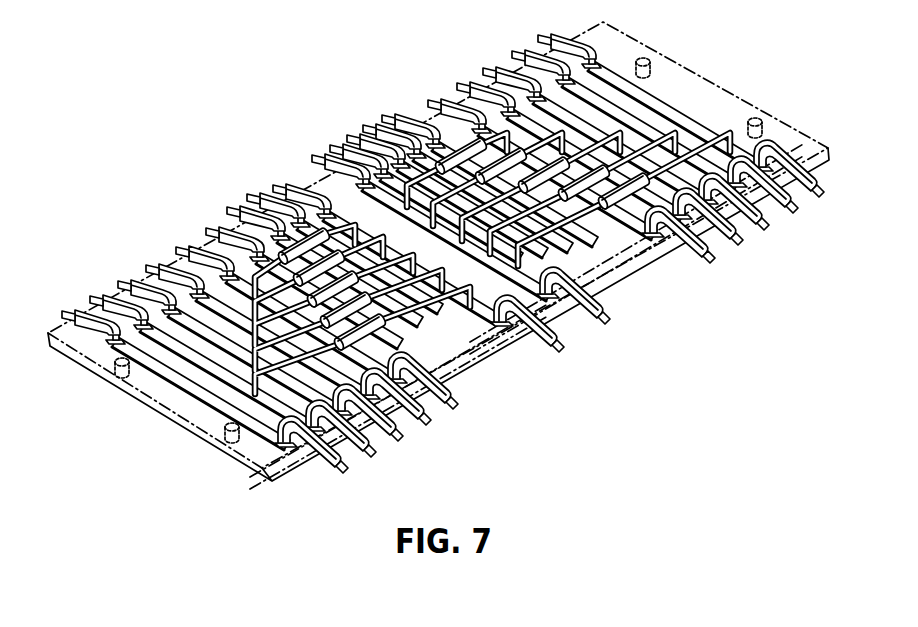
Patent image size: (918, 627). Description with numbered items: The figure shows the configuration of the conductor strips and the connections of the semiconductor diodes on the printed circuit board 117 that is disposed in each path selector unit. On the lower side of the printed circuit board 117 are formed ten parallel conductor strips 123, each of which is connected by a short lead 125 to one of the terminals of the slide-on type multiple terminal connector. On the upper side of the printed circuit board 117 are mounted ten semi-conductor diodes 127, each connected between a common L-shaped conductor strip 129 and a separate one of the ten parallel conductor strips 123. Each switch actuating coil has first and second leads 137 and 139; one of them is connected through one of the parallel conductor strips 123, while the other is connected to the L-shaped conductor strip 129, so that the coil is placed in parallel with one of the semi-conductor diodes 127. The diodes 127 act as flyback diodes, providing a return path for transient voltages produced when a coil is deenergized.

The printed circuit board 117 is at (195, 410).
The parallel conductor strips 123 is at (162, 383).
The short lead 125 is at (338, 462).
The semi-conductor diodes 127 is at (382, 336).
The L-shaped conductor strip 129 is at (484, 310).
The first lead 137 is at (62, 311).
The second lead 139 is at (268, 184).